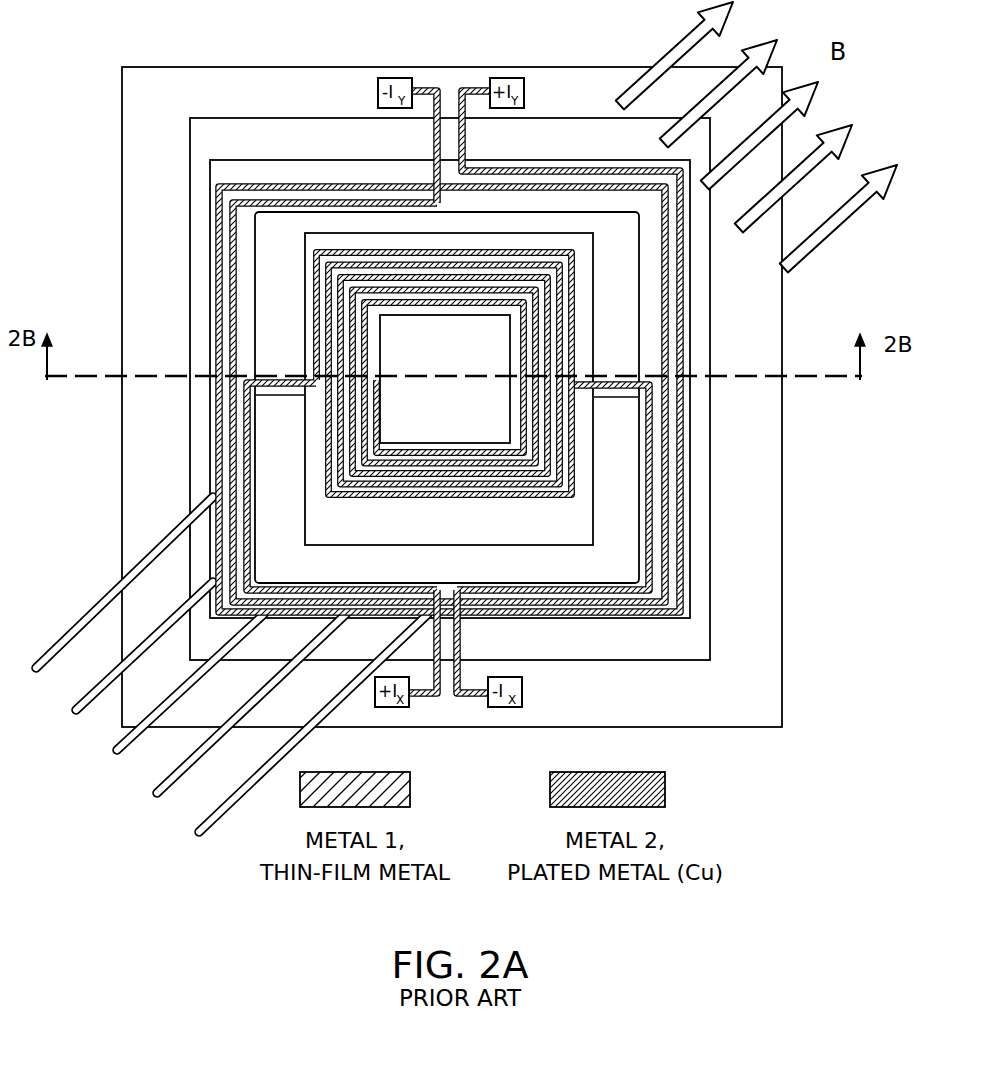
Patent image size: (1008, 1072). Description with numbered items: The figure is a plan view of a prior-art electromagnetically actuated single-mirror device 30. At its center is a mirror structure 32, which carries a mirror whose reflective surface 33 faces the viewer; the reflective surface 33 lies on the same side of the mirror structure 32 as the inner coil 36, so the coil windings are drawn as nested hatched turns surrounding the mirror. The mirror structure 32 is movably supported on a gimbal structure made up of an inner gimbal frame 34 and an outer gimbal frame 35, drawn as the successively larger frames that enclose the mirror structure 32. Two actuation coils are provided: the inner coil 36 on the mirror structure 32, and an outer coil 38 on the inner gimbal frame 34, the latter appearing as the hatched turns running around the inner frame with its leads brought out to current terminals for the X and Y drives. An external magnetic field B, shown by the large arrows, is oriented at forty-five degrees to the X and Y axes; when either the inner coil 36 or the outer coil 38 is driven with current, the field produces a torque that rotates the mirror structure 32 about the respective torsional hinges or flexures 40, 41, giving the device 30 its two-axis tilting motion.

The electromagnetically actuated single-mirror device 30 is at (78, 69).
The mirror structure 32 is at (305, 532).
The reflective surface 33 is at (432, 404).
The inner gimbal frame 34 is at (690, 441).
The outer gimbal frame 35 is at (773, 575).
The inner coil 36 is at (575, 292).
The outer coil 38 is at (212, 455).
The torsional hinge 40 is at (293, 371).
The torsional hinge 41 is at (469, 152).